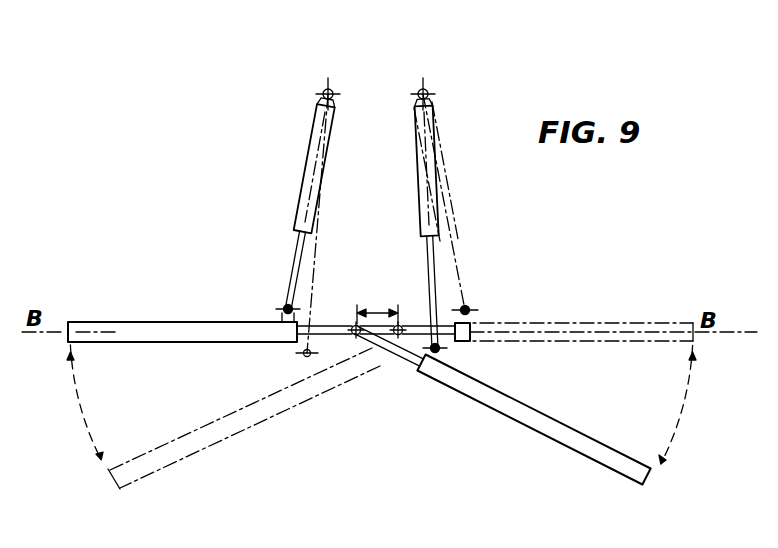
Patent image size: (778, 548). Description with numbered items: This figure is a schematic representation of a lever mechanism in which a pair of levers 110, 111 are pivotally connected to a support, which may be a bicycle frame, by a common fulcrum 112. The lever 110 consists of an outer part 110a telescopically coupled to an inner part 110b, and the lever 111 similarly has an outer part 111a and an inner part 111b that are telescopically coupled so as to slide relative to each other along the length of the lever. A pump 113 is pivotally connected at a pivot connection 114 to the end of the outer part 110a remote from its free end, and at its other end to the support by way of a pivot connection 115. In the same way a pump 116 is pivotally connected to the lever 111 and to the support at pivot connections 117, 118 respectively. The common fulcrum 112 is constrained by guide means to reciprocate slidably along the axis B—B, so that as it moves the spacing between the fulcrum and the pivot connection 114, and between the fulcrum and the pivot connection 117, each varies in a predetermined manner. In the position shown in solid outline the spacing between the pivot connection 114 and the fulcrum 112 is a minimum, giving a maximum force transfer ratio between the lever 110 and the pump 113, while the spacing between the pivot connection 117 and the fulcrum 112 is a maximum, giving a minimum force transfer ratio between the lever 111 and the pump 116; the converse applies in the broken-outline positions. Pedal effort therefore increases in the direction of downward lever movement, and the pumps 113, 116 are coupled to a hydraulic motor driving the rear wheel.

The lever 110 is at (168, 313).
The outer part 110a is at (125, 321).
The inner part 110b is at (350, 328).
The lever 111 is at (523, 437).
The outer part 111a is at (533, 417).
The inner part 111b is at (395, 362).
The common fulcrum 112 is at (356, 313).
The pump 113 is at (300, 189).
The pivot connection 114 is at (283, 303).
The pivot connection 115 is at (322, 90).
The pump 116 is at (428, 200).
The pivot connection 117 is at (440, 353).
The pivot connection 118 is at (428, 91).